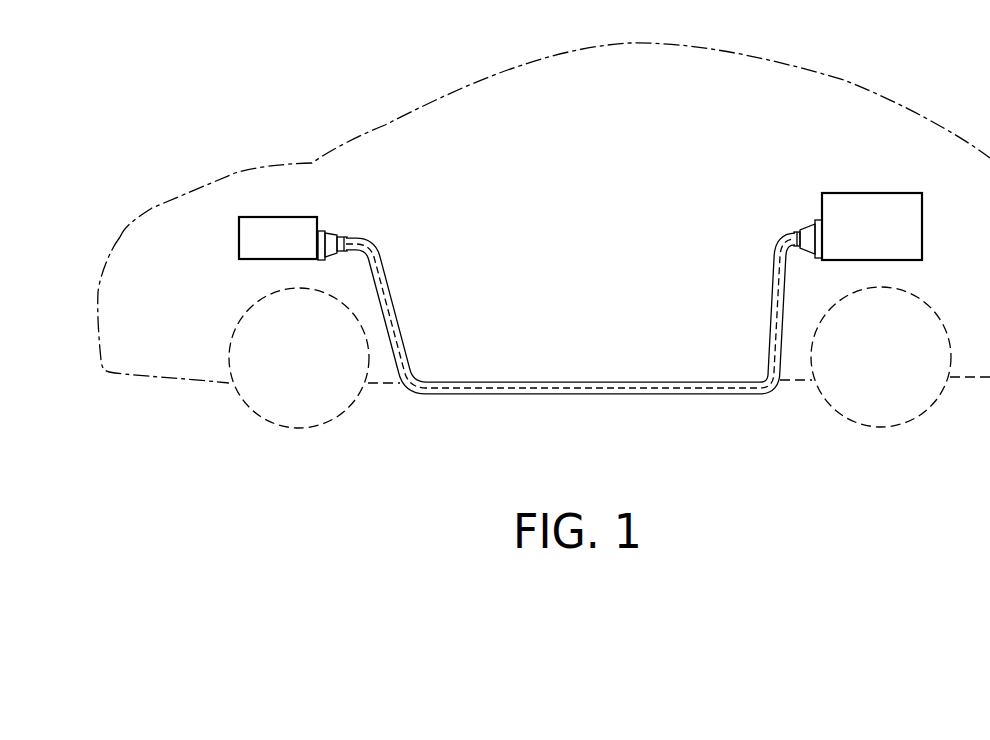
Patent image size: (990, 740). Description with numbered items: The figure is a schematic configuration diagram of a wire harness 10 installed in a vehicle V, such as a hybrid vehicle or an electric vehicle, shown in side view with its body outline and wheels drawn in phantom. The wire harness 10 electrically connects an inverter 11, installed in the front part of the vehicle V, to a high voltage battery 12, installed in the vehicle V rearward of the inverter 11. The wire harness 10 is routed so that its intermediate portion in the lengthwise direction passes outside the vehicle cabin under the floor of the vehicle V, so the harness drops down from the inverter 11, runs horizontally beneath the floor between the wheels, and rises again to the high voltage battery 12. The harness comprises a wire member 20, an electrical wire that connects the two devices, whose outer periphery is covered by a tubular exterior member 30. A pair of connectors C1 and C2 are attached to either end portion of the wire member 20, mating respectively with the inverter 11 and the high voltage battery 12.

The vehicle V is at (847, 80).
The wire harness 10 is at (747, 157).
The inverter 11 is at (280, 217).
The high voltage battery 12 is at (862, 193).
The connector C1 is at (334, 232).
The connector C2 is at (808, 223).
The wire member 20 is at (392, 316).
The exterior member 30 is at (570, 313).